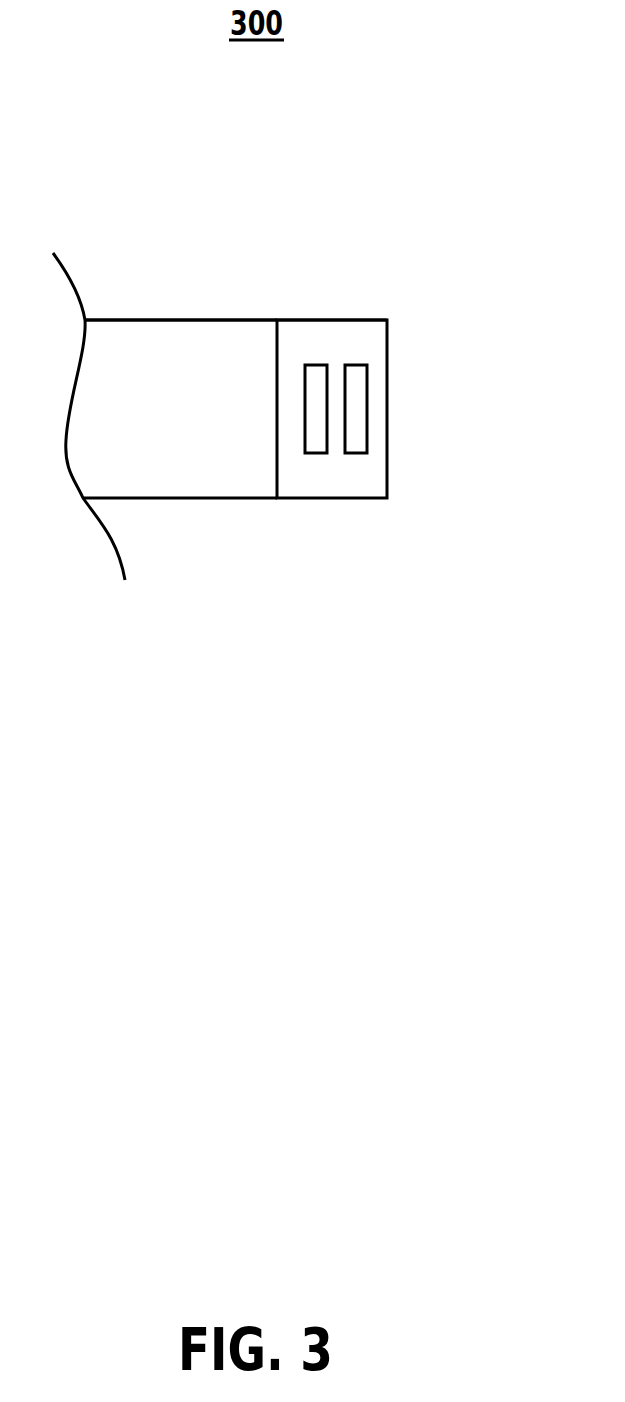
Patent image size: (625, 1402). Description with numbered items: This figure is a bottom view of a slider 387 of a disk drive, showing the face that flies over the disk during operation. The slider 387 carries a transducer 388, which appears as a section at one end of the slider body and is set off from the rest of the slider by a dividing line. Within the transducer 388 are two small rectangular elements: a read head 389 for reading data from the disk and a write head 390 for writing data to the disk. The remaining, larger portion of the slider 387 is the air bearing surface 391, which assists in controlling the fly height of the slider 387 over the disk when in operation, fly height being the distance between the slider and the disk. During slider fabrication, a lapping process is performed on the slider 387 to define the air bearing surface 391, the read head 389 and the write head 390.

The slider 387 is at (193, 320).
The transducer 388 is at (353, 343).
The read head 389 is at (315, 422).
The write head 390 is at (353, 420).
The air bearing surface 391 is at (197, 453).